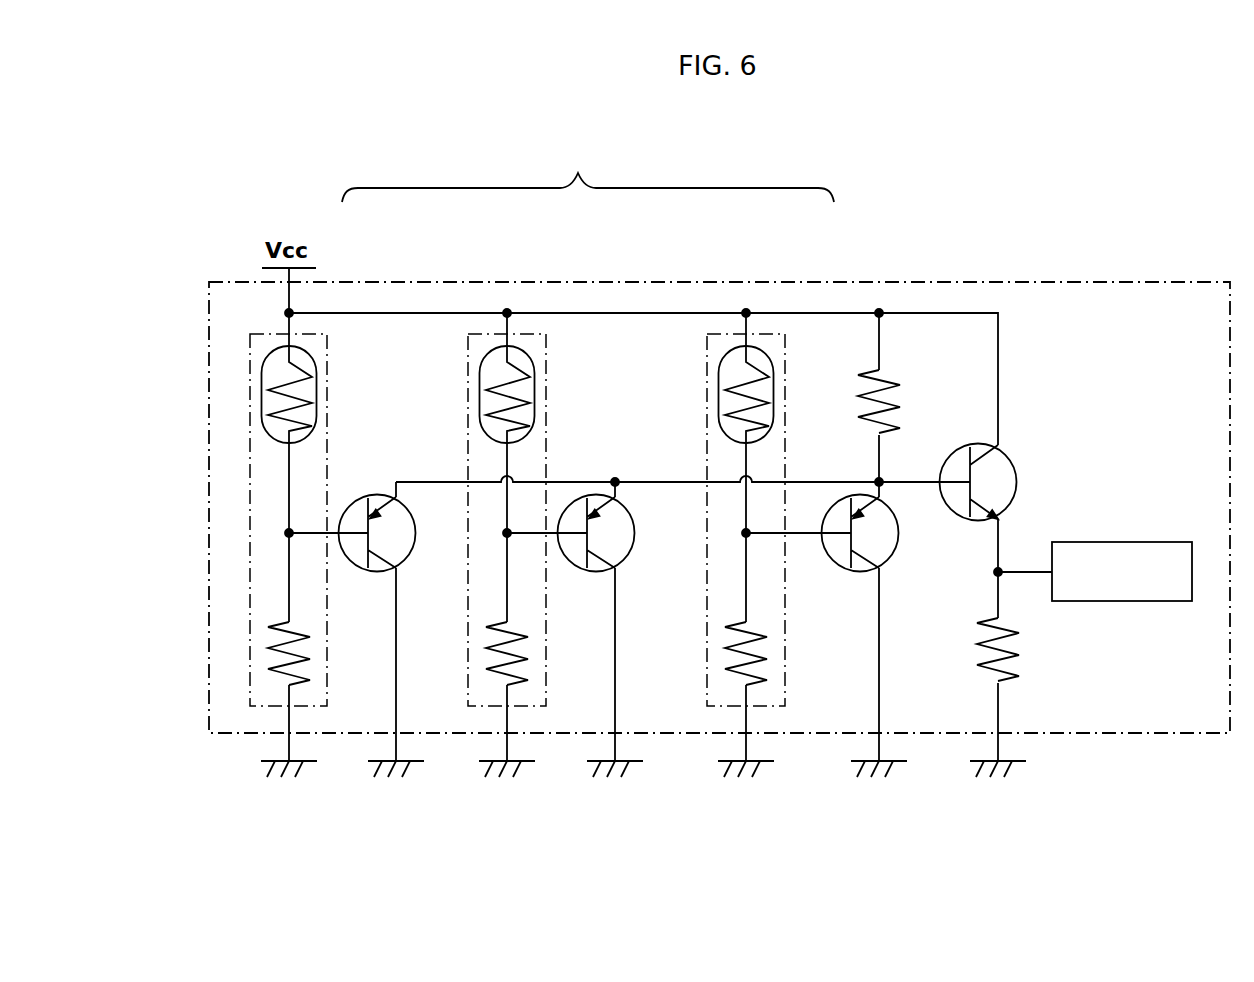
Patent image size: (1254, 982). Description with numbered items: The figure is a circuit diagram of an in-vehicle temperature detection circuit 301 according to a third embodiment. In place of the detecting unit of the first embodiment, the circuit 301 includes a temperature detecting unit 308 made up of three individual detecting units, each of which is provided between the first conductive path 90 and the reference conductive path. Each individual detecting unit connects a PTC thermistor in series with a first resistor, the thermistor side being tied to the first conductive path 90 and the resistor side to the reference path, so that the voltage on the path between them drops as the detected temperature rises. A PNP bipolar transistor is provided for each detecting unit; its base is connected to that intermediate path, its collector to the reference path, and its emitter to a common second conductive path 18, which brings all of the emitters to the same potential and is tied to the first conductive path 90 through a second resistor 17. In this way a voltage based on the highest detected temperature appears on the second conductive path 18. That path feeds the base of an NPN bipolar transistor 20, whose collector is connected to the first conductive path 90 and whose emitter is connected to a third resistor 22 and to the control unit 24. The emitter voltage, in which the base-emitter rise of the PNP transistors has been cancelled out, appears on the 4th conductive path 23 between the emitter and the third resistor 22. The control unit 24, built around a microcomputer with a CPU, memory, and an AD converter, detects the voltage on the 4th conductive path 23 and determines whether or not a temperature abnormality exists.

The temperature detection circuit 301 is at (1135, 282).
The temperature detecting unit 308 is at (588, 174).
The second resistor 17 is at (887, 380).
The second conductive path 18 is at (578, 482).
The bipolar transistor 20 is at (1015, 468).
The third resistor 22 is at (1020, 652).
The 4th conductive path 23 is at (998, 597).
The control unit 24 is at (1155, 542).
The first conductive path 90 is at (627, 315).